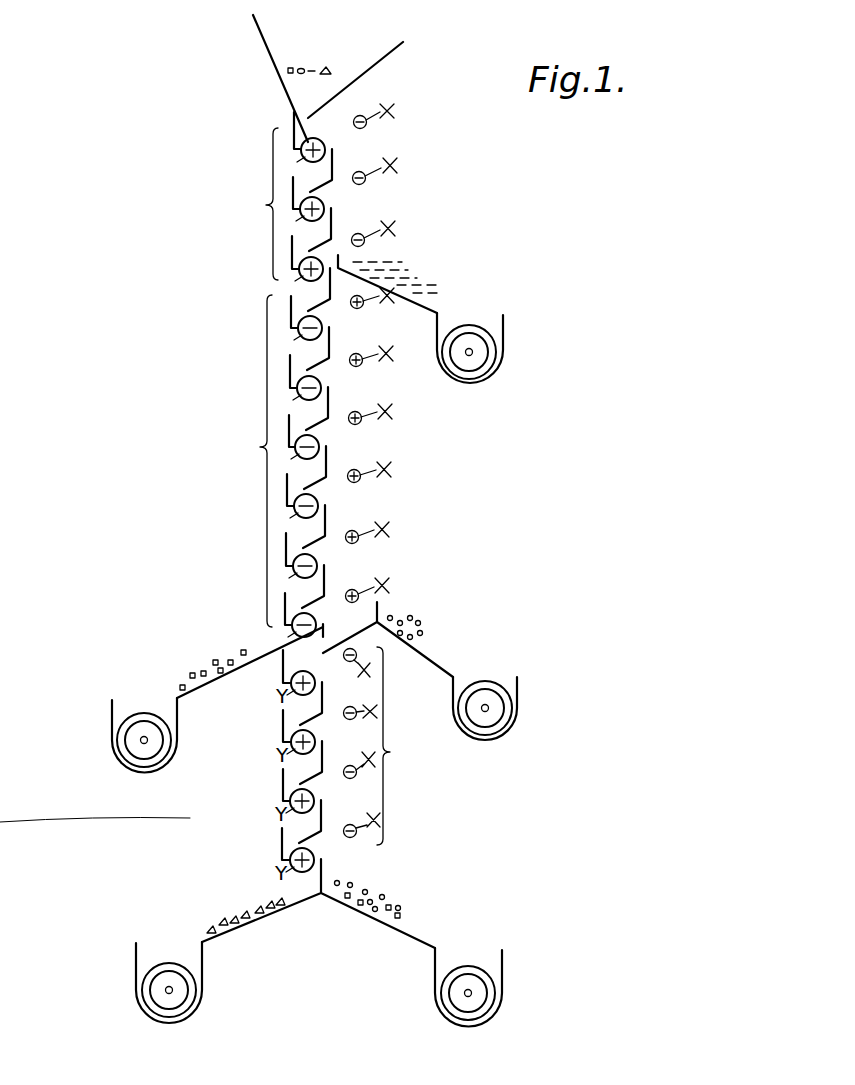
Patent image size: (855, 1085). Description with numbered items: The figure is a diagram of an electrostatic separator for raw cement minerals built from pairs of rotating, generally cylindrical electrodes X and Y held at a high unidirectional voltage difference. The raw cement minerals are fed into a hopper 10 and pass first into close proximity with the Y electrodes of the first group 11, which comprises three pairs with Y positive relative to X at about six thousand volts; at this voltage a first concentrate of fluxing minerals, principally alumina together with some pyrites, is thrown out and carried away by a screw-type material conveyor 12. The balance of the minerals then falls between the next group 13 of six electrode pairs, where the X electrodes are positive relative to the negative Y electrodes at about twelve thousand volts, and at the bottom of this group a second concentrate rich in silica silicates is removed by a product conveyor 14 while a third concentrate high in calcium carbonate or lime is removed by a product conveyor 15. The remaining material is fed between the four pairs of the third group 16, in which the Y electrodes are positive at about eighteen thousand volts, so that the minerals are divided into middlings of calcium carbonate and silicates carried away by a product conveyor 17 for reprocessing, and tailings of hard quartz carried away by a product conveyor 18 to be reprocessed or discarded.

The hopper 10 is at (254, 62).
The first group of electrodes 11 is at (260, 205).
The material conveyor 12 is at (529, 348).
The second group of electrodes 13 is at (257, 446).
The product conveyor 14 is at (562, 694).
The product conveyor 15 is at (100, 720).
The third group of electrodes 16 is at (390, 752).
The product conveyor 17 is at (537, 982).
The product conveyor 18 is at (111, 960).